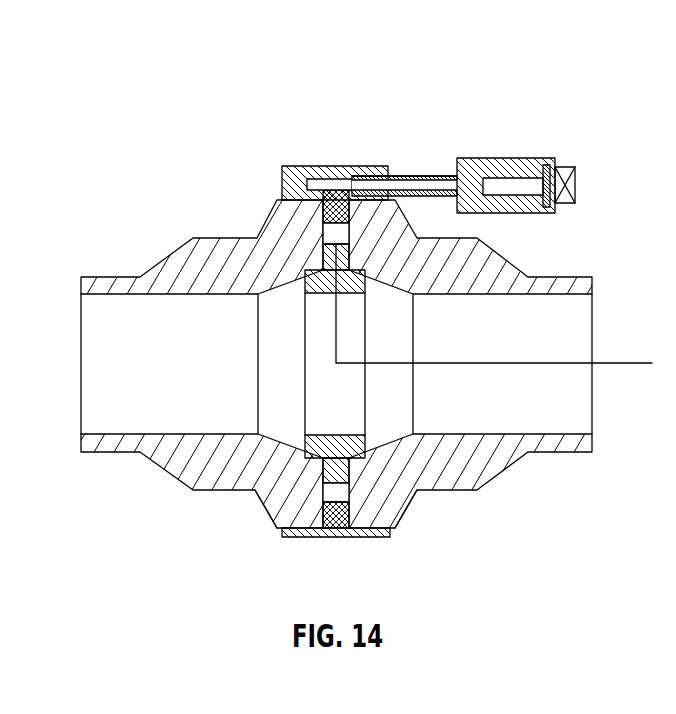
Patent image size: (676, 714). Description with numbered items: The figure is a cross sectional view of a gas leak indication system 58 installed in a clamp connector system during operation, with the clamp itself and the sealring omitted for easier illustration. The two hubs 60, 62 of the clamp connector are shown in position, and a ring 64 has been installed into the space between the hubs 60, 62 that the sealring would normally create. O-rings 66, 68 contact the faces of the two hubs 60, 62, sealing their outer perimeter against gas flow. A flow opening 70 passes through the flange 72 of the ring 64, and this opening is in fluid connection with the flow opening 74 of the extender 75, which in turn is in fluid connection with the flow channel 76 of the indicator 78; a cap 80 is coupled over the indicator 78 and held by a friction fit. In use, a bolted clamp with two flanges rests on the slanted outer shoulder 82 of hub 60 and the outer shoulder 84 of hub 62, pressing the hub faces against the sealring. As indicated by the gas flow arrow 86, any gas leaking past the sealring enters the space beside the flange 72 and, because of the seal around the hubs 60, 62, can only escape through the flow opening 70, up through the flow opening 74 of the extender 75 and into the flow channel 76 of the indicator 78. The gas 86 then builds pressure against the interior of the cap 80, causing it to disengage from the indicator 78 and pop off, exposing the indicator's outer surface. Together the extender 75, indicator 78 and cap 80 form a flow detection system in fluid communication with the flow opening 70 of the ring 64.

The gas leak indication system 58 is at (540, 77).
The hub 60 is at (488, 462).
The hub 62 is at (178, 463).
The ring 64 is at (340, 532).
The o-ring 66 is at (298, 537).
The o-ring 68 is at (350, 517).
The flow opening 70 is at (282, 172).
The flange 72 is at (328, 235).
The flow opening 74 is at (395, 185).
The extender 75 is at (438, 176).
The flow channel 76 is at (518, 184).
The indicator 78 is at (497, 158).
The cap 80 is at (557, 210).
The outer shoulder 82 is at (408, 507).
The outer shoulder 84 is at (263, 512).
The gas flow arrow 86 is at (617, 362).